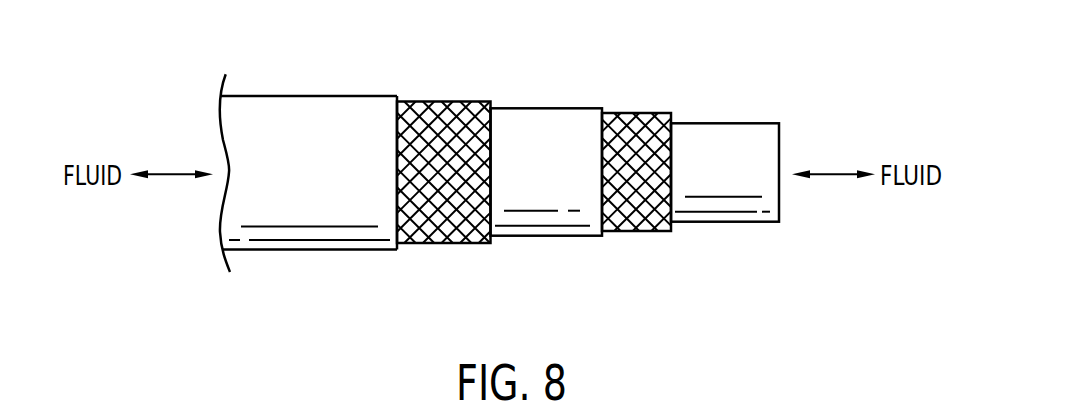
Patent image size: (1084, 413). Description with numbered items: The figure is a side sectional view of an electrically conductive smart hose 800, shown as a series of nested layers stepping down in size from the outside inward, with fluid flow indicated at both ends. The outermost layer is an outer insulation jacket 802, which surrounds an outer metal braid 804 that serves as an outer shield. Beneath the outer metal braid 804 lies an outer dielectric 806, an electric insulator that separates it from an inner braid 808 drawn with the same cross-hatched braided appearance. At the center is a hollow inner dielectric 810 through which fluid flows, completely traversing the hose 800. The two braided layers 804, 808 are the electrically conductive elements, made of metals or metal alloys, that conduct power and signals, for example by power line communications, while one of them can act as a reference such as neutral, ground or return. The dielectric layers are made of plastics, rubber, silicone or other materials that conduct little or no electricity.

The smart hose 800 is at (663, 54).
The outer insulation jacket 802 is at (300, 216).
The outer metal braid 804 is at (437, 216).
The outer dielectric 806 is at (537, 216).
The inner braid 808 is at (632, 208).
The hollow inner dielectric 810 is at (721, 203).